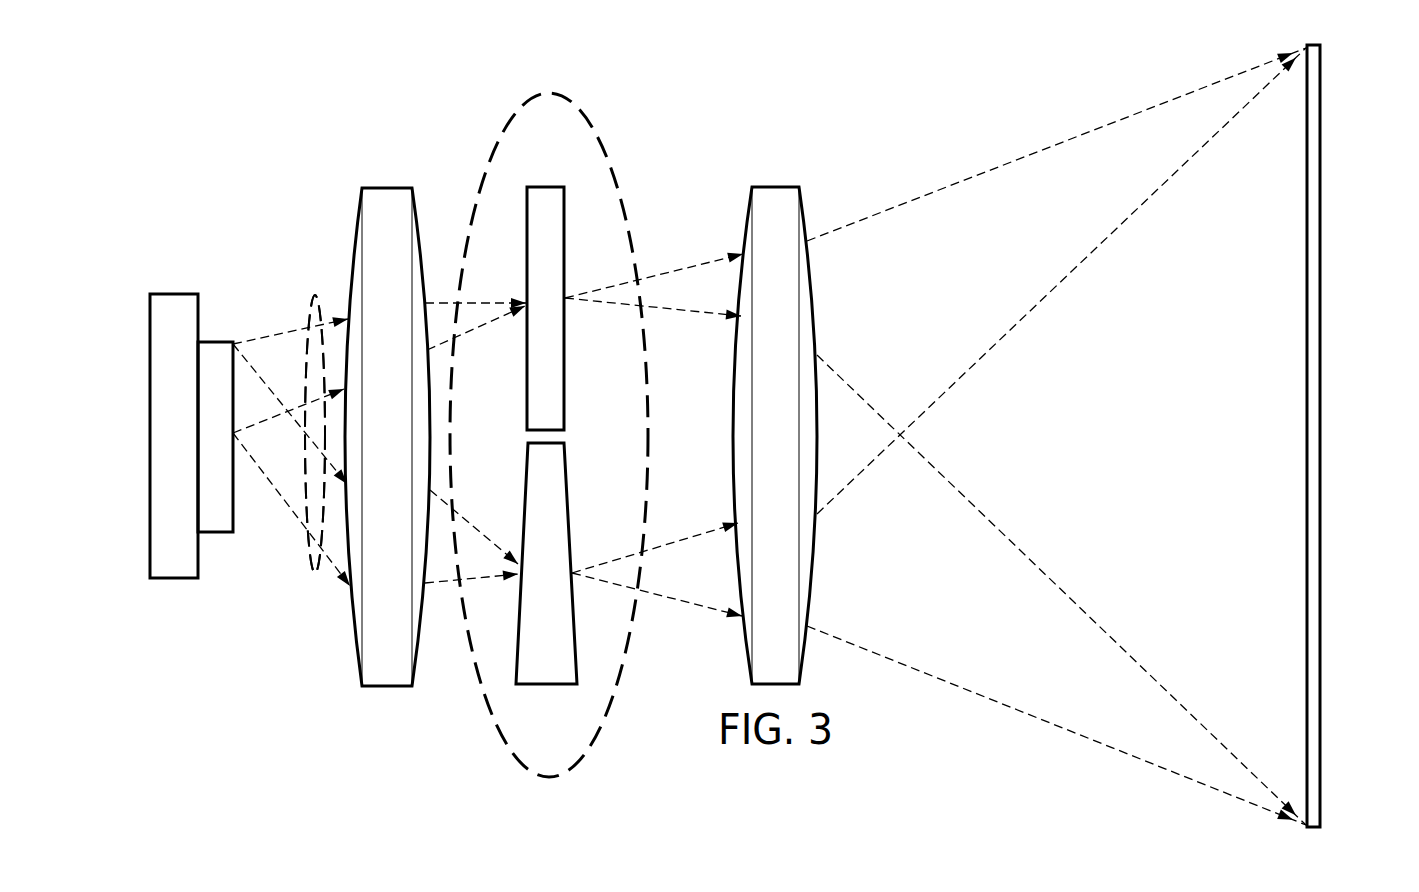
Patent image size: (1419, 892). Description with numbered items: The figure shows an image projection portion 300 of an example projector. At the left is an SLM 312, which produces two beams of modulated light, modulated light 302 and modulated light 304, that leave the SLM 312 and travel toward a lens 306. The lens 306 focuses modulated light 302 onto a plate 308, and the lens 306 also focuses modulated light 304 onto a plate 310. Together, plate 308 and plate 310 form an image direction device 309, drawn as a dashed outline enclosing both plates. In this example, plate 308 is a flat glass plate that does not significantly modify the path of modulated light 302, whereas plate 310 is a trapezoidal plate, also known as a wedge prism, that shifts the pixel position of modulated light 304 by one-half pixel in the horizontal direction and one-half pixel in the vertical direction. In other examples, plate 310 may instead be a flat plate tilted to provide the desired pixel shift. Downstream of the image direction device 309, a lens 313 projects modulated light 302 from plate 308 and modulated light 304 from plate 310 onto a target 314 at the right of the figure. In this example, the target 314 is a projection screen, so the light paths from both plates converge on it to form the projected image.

The image projection portion 300 is at (258, 96).
The modulated light 302 is at (315, 295).
The modulated light 304 is at (317, 573).
The lens 306 is at (385, 188).
The plate 308 is at (543, 187).
The image direction device 309 is at (625, 160).
The plate 310 is at (547, 684).
The SLM 312 is at (175, 294).
The lens 313 is at (776, 187).
The target 314 is at (1321, 436).